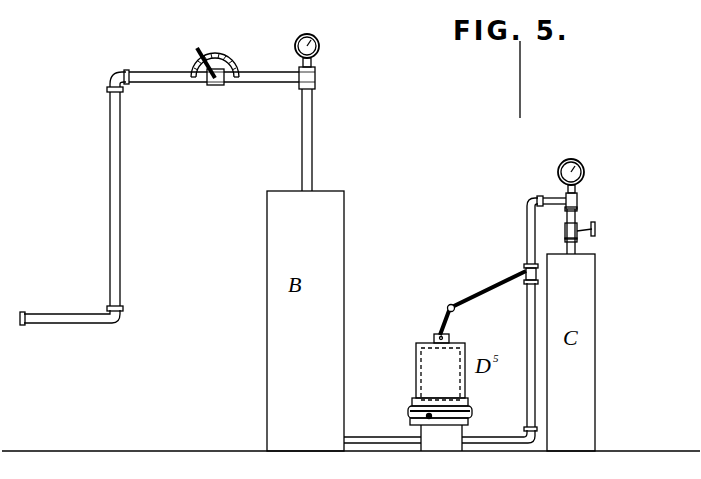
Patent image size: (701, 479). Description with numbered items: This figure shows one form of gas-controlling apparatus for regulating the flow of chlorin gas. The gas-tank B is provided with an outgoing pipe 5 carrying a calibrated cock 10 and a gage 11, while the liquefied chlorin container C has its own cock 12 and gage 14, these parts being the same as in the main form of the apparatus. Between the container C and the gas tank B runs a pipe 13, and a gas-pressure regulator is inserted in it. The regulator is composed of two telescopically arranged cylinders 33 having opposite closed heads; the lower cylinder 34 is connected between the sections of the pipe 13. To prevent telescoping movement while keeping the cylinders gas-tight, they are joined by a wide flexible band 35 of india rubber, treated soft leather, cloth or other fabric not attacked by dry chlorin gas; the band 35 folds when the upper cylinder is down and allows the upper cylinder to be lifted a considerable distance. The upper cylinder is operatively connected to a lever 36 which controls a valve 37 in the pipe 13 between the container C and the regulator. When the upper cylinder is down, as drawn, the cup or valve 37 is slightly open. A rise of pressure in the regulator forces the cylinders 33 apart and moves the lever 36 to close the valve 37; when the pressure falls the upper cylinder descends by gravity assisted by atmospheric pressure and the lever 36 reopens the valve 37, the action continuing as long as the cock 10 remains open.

The outgoing pipe 5 is at (312, 126).
The calibrated cock 10 is at (224, 60).
The gage 11 is at (319, 49).
The cock 12 is at (582, 236).
The pipe 13 is at (527, 226).
The gage 14 is at (578, 181).
The telescopically arranged cylinders 33 is at (432, 386).
The lower cylinder 34 is at (437, 432).
The flexible band 35 is at (471, 412).
The lever 36 is at (472, 298).
The valve 37 is at (526, 272).